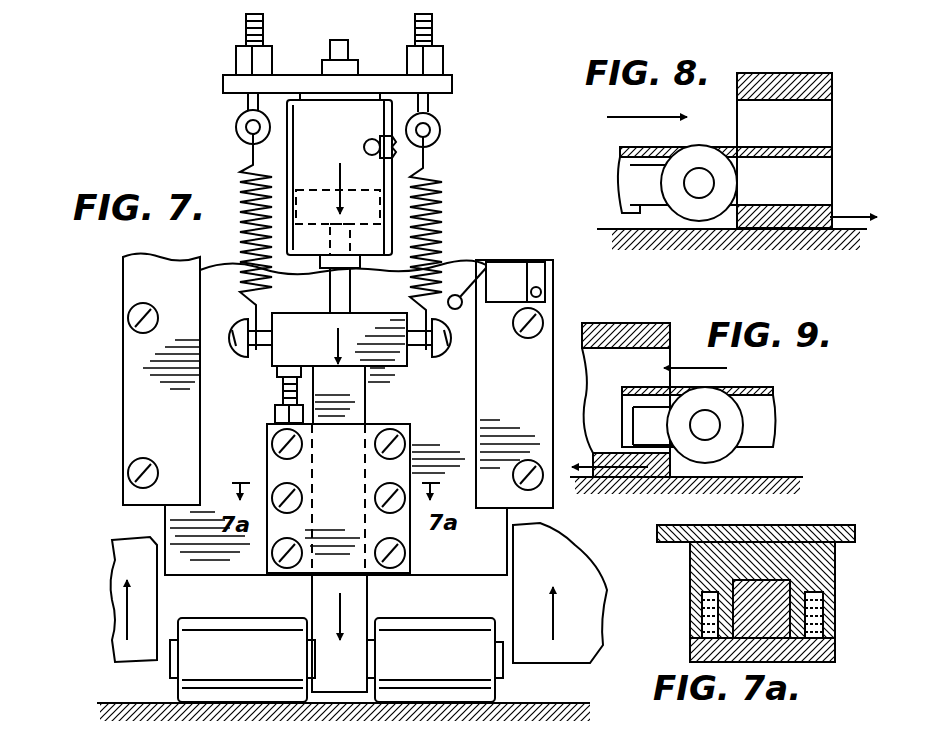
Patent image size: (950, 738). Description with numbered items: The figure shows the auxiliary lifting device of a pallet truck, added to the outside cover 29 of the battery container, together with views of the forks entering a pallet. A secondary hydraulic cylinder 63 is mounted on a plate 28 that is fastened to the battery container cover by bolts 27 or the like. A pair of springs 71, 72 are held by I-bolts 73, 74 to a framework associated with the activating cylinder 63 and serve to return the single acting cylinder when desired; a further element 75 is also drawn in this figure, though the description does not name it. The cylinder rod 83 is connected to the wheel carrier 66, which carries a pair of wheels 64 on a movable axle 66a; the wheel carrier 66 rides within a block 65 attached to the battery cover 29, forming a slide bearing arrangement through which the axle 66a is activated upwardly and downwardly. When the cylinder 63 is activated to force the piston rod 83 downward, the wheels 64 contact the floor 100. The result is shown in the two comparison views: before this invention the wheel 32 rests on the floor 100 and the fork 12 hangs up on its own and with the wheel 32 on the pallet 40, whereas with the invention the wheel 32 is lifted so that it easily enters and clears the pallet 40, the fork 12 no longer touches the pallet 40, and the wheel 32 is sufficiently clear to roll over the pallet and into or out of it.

In FIG. 8, the fork 12 is at (803, 150).
In FIG. 9, the fork 12 is at (753, 385).
In FIG. 7, the bolts 27 is at (130, 323).
In FIG. 7, the plate 28 is at (137, 278).
In FIG. 7, the outside cover 29 is at (112, 600).
In FIG. 7A, the outside cover 29 is at (795, 525).
In FIG. 8, the wheel 32 is at (737, 185).
In FIG. 9, the wheel 32 is at (737, 430).
In FIG. 8, the pallet 40 is at (812, 73).
In FIG. 9, the pallet 40 is at (658, 323).
In FIG. 7, the secondary hydraulic cylinder 63 is at (388, 114).
In FIG. 7, the wheels 64 is at (222, 628).
In FIG. 7, the block 65 is at (268, 547).
In FIG. 7A, the block 65 is at (835, 625).
In FIG. 7, the wheel carrier 66 is at (288, 347).
In FIG. 7A, the wheel carrier 66 is at (773, 590).
In FIG. 7, the movable axle 66a is at (500, 672).
In FIG. 7, the spring 71 is at (240, 172).
In FIG. 7, the spring 72 is at (440, 190).
In FIG. 7, the I-bolt 73 is at (236, 60).
In FIG. 7, the I-bolt 74 is at (444, 62).
In FIG. 7, the adjuster / micro switch 75 is at (282, 396).
In FIG. 7, the cylinder rod 83 is at (334, 292).
In FIG. 7, the floor 100 is at (122, 703).
In FIG. 8, the floor 100 is at (630, 228).
In FIG. 9, the floor 100 is at (780, 477).